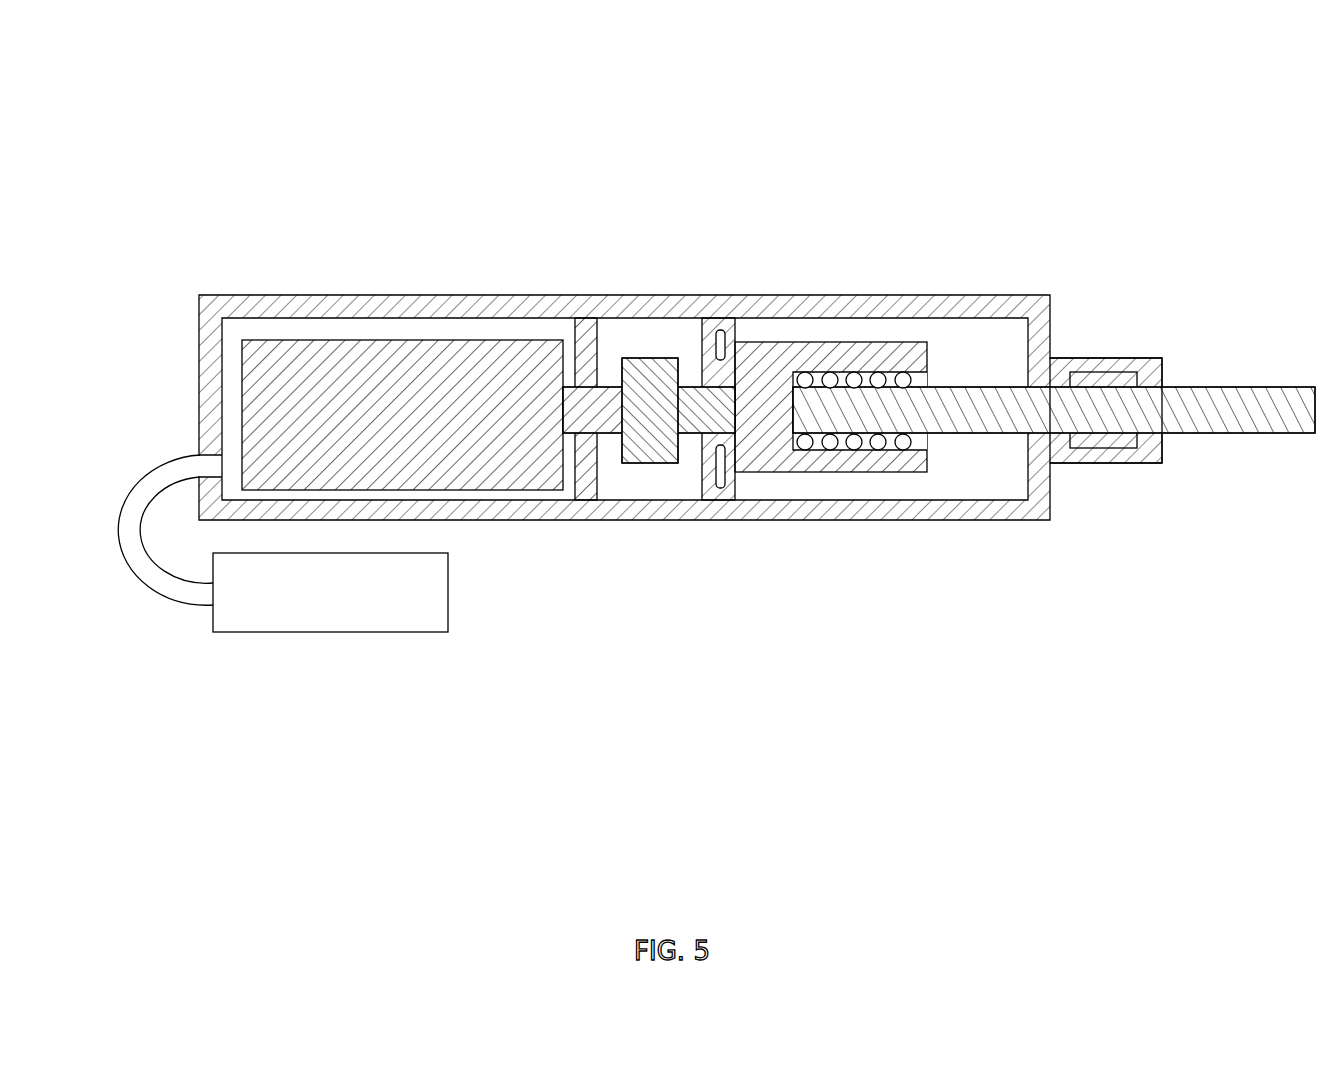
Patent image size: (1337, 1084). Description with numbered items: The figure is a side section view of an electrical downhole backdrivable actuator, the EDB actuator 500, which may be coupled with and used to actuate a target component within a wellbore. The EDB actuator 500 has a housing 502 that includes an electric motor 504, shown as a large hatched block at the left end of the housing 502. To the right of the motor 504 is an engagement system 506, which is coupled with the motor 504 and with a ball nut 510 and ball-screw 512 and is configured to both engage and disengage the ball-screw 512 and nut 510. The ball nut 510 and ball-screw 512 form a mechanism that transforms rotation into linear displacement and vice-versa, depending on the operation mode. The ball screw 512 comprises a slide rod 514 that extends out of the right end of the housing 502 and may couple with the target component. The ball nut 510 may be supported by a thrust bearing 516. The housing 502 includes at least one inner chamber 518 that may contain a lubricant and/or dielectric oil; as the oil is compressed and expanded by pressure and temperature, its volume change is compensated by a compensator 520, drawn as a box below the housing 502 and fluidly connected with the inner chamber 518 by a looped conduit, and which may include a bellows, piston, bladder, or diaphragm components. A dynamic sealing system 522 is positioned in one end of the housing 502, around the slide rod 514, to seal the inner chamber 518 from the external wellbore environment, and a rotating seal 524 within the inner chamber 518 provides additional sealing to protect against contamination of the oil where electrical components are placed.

The EDB actuator 500 is at (772, 133).
The housing 502 is at (233, 295).
The electric motor 504 is at (343, 342).
The engagement system 506 is at (658, 358).
The ball nut 510 is at (772, 342).
The ball-screw 512 is at (950, 387).
The slide rod 514 is at (1210, 383).
The thrust bearing 516 is at (718, 490).
The inner chamber 518 is at (960, 475).
The compensator 520 is at (330, 592).
The dynamic sealing system 522 is at (1104, 448).
The rotating seal 524 is at (585, 500).